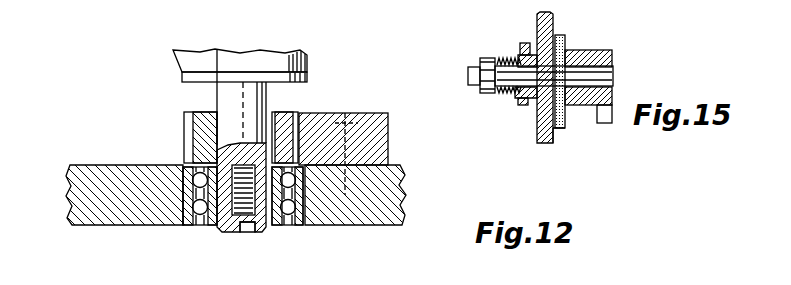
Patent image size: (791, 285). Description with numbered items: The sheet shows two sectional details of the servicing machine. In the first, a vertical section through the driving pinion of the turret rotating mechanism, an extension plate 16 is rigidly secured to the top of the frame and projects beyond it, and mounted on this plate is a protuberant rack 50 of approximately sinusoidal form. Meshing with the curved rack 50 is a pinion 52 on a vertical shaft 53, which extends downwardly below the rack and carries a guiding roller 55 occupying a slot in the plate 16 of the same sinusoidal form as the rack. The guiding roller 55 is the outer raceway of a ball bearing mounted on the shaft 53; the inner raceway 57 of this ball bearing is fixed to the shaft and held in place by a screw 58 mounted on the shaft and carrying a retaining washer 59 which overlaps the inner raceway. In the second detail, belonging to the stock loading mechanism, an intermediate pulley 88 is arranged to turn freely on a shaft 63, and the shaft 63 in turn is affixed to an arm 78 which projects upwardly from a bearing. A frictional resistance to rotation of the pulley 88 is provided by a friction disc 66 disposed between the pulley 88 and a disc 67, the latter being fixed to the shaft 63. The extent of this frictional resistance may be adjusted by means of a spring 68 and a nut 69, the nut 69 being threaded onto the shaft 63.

In FIG. 12, the extension plate 16 is at (72, 193).
In FIG. 12, the rack 50 is at (378, 133).
In FIG. 12, the pinion 52 is at (285, 113).
In FIG. 12, the vertical shaft 53 is at (226, 97).
In FIG. 12, the guiding roller 55 is at (193, 225).
In FIG. 12, the inner raceway 57 is at (283, 227).
In FIG. 12, the screw 58 is at (252, 233).
In FIG. 12, the retaining washer 59 is at (220, 228).
In FIG. 15, the shaft 63 is at (616, 67).
In FIG. 15, the friction disc 66 is at (558, 126).
In FIG. 15, the disc 67 is at (566, 122).
In FIG. 15, the spring 68 is at (510, 56).
In FIG. 15, the nut 69 is at (480, 62).
In FIG. 15, the arm 78 is at (610, 108).
In FIG. 15, the intermediate pulley 88 is at (537, 32).